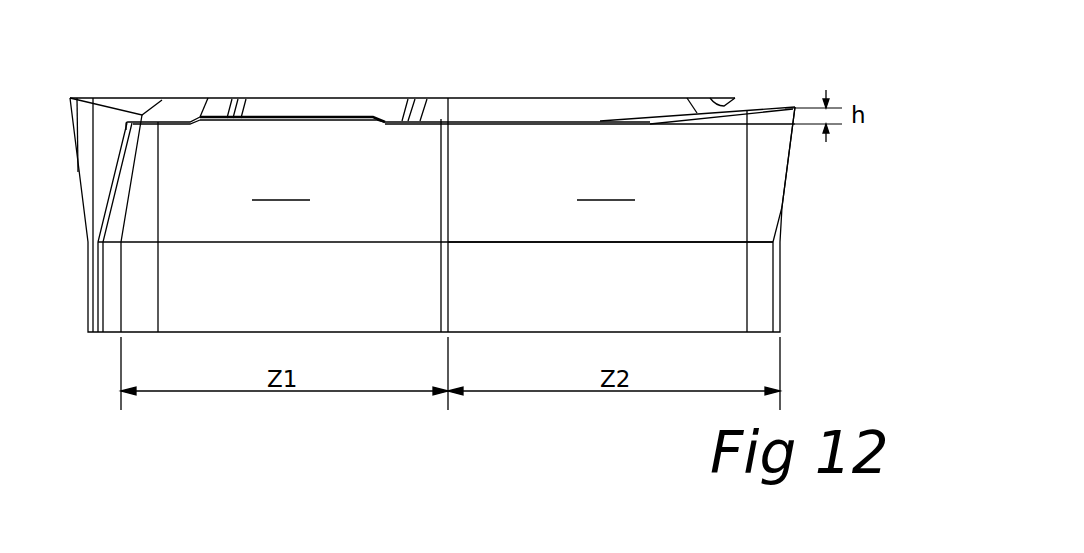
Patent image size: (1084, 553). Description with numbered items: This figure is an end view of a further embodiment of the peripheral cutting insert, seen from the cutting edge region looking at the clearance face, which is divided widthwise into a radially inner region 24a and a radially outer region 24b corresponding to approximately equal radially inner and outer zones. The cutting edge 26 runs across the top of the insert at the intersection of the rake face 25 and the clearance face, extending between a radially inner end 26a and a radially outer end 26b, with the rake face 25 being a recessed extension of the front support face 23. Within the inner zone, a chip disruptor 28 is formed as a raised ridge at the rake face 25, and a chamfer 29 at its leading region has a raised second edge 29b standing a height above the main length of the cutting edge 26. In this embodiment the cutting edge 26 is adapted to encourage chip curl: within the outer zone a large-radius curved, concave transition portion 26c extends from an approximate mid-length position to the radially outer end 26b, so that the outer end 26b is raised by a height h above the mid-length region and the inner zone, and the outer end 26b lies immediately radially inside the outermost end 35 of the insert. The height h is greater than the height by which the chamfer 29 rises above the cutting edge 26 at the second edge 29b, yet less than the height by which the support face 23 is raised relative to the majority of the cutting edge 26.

The front support face 23 is at (532, 98).
The radially inner region of the clearance face 24a is at (218, 158).
The radially outer region of the clearance face 24b is at (610, 208).
The rake face 25 is at (572, 110).
The cutting edge 26 is at (463, 120).
The radially inner end of the cutting edge 26a is at (155, 125).
The radially outer end of the cutting edge 26b is at (748, 108).
The radially outer portion of the cutting edge 26c is at (662, 120).
The chip disruptor 28 is at (349, 103).
The chamfer 29 is at (293, 120).
The second edge of the chamfer 29b is at (217, 117).
The outermost end of the insert 35 is at (795, 107).